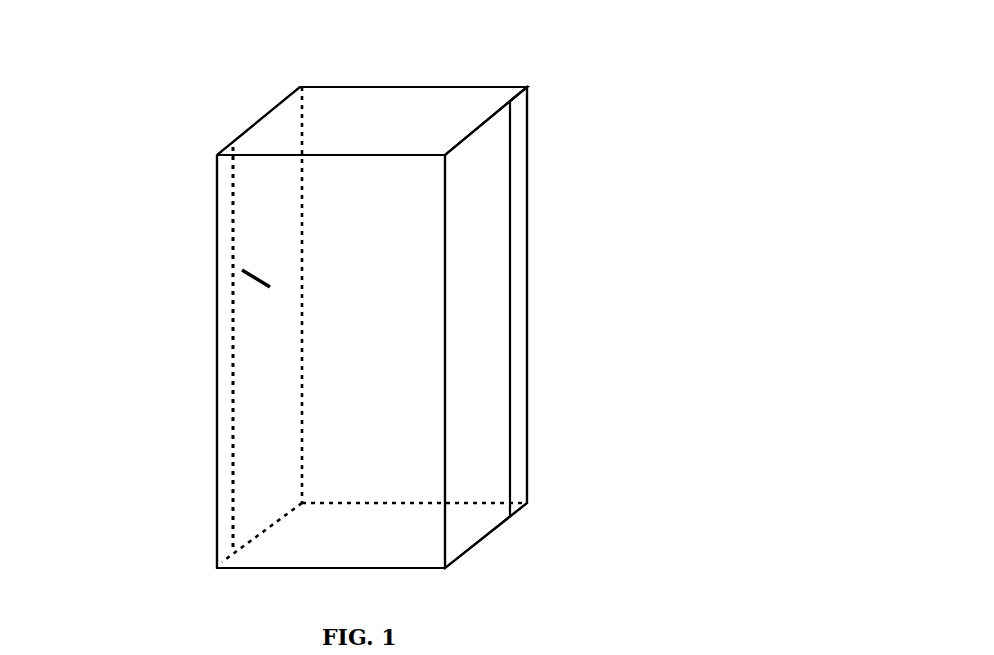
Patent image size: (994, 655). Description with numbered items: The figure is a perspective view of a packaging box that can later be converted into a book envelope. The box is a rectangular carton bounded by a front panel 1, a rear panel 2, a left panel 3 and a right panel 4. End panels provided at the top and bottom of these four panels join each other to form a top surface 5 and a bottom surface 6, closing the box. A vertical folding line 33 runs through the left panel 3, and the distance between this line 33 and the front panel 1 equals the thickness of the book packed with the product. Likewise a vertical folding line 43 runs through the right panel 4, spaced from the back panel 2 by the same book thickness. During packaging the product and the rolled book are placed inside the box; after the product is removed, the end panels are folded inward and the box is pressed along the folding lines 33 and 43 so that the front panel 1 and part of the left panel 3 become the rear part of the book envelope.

The front panel 1 is at (338, 353).
The rear panel 2 is at (378, 215).
The left panel 3 is at (217, 258).
The vertical folding line 33 is at (227, 337).
The right panel 4 is at (468, 329).
The vertical folding line 43 is at (508, 277).
The top surface 5 is at (387, 110).
The bottom surface 6 is at (349, 540).